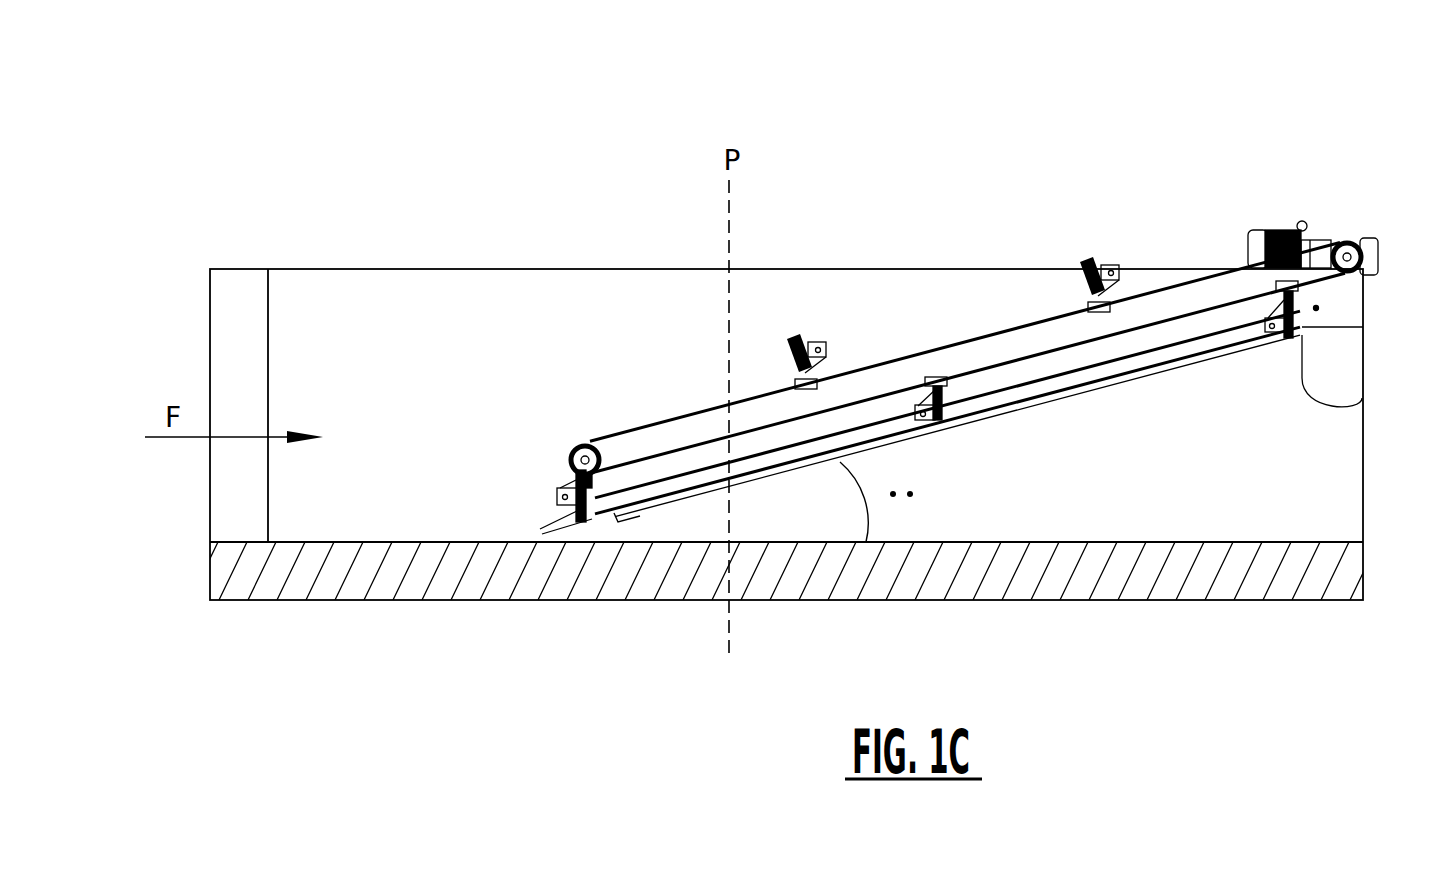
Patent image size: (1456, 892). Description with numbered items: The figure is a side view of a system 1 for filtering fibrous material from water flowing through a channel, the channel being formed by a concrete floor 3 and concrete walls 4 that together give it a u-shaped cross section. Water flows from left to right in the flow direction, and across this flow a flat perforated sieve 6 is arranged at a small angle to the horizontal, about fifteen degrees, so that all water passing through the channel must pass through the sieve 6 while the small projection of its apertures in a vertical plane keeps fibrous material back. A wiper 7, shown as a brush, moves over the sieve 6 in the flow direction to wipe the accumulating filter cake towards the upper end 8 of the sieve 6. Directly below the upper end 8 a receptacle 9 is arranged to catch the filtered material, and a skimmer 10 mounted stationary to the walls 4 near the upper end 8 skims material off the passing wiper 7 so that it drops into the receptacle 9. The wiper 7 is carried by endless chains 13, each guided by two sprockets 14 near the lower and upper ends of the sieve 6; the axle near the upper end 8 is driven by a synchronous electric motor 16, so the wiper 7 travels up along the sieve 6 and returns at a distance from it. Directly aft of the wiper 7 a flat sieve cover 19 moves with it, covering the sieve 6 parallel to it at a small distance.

The system 1 is at (175, 177).
The concrete floor 3 is at (388, 540).
The concrete wall 4 is at (385, 356).
The sieve 6 is at (1155, 368).
The wiper 7 is at (548, 527).
The upper end of the sieve 8 is at (1283, 325).
The receptacle 9 is at (1338, 368).
The skimmer 10 is at (1313, 309).
The endless chain 13 is at (685, 420).
The sprocket 14 is at (583, 450).
The synchronous electric motor 16 is at (1270, 235).
The sieve cover 19 is at (803, 340).